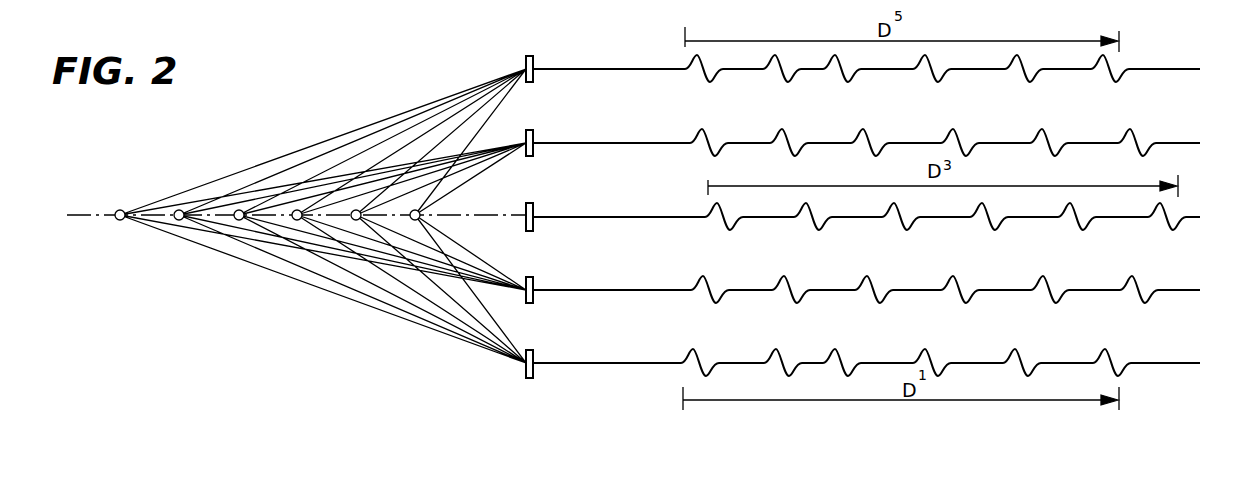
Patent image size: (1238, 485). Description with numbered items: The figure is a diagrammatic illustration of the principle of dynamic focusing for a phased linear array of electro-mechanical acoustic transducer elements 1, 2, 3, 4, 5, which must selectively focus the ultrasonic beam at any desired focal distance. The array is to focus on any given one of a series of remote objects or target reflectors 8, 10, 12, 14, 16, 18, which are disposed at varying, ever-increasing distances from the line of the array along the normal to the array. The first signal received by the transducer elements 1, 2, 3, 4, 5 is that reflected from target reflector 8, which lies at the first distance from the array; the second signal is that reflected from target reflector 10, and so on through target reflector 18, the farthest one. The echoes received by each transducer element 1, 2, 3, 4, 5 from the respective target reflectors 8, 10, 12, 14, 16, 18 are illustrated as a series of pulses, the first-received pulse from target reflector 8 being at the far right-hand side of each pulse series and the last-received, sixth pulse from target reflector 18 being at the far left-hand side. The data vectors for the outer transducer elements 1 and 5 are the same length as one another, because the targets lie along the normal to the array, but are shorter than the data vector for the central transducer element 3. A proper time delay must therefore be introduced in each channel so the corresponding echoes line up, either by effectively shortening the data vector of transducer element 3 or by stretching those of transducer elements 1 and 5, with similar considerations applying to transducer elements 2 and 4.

The transducer element 1 is at (533, 375).
The transducer element 2 is at (533, 300).
The transducer element 3 is at (533, 228).
The transducer element 4 is at (533, 153).
The transducer element 5 is at (533, 79).
The target reflector 8 is at (420, 218).
The target reflector 10 is at (355, 210).
The target reflector 12 is at (296, 210).
The target reflector 14 is at (238, 220).
The target reflector 16 is at (180, 210).
The target reflector 18 is at (118, 221).